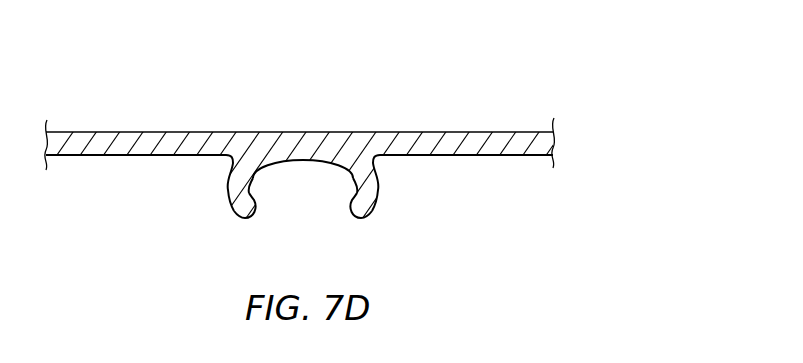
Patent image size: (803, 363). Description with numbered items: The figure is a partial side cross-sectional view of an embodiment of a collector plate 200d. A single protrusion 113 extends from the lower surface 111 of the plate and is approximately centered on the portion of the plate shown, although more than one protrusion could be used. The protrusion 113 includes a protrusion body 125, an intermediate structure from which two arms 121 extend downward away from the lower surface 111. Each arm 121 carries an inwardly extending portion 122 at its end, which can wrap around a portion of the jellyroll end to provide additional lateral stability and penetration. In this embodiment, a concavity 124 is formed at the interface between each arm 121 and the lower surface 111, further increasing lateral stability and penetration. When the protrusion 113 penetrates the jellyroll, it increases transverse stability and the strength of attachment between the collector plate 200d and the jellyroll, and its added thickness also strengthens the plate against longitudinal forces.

The collector plate 200d is at (345, 142).
The lower surface 111 is at (520, 160).
The protrusion 113 is at (319, 165).
The arms 121 is at (241, 177).
The inwardly extending portions 122 is at (247, 210).
The concavity 124 is at (224, 163).
The protrusion body 125 is at (322, 166).